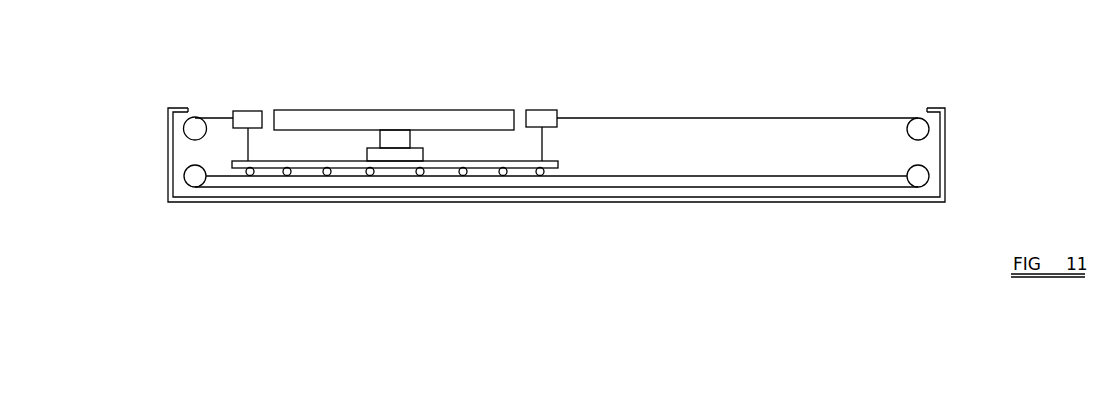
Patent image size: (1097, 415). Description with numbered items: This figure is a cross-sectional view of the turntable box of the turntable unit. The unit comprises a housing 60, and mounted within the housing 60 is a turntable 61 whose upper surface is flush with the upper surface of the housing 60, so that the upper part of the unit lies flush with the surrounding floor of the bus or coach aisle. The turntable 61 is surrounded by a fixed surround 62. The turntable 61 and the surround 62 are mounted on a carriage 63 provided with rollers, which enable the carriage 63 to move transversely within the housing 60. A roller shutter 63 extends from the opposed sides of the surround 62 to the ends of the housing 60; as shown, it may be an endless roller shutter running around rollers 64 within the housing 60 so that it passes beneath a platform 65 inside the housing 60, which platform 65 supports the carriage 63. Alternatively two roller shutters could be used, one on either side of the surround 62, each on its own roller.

The housing 60 is at (945, 160).
The turntable 61 is at (358, 110).
The fixed surround 62 is at (546, 110).
The carriage 63 is at (750, 118).
The rollers 64 is at (918, 128).
The platform 65 is at (715, 176).